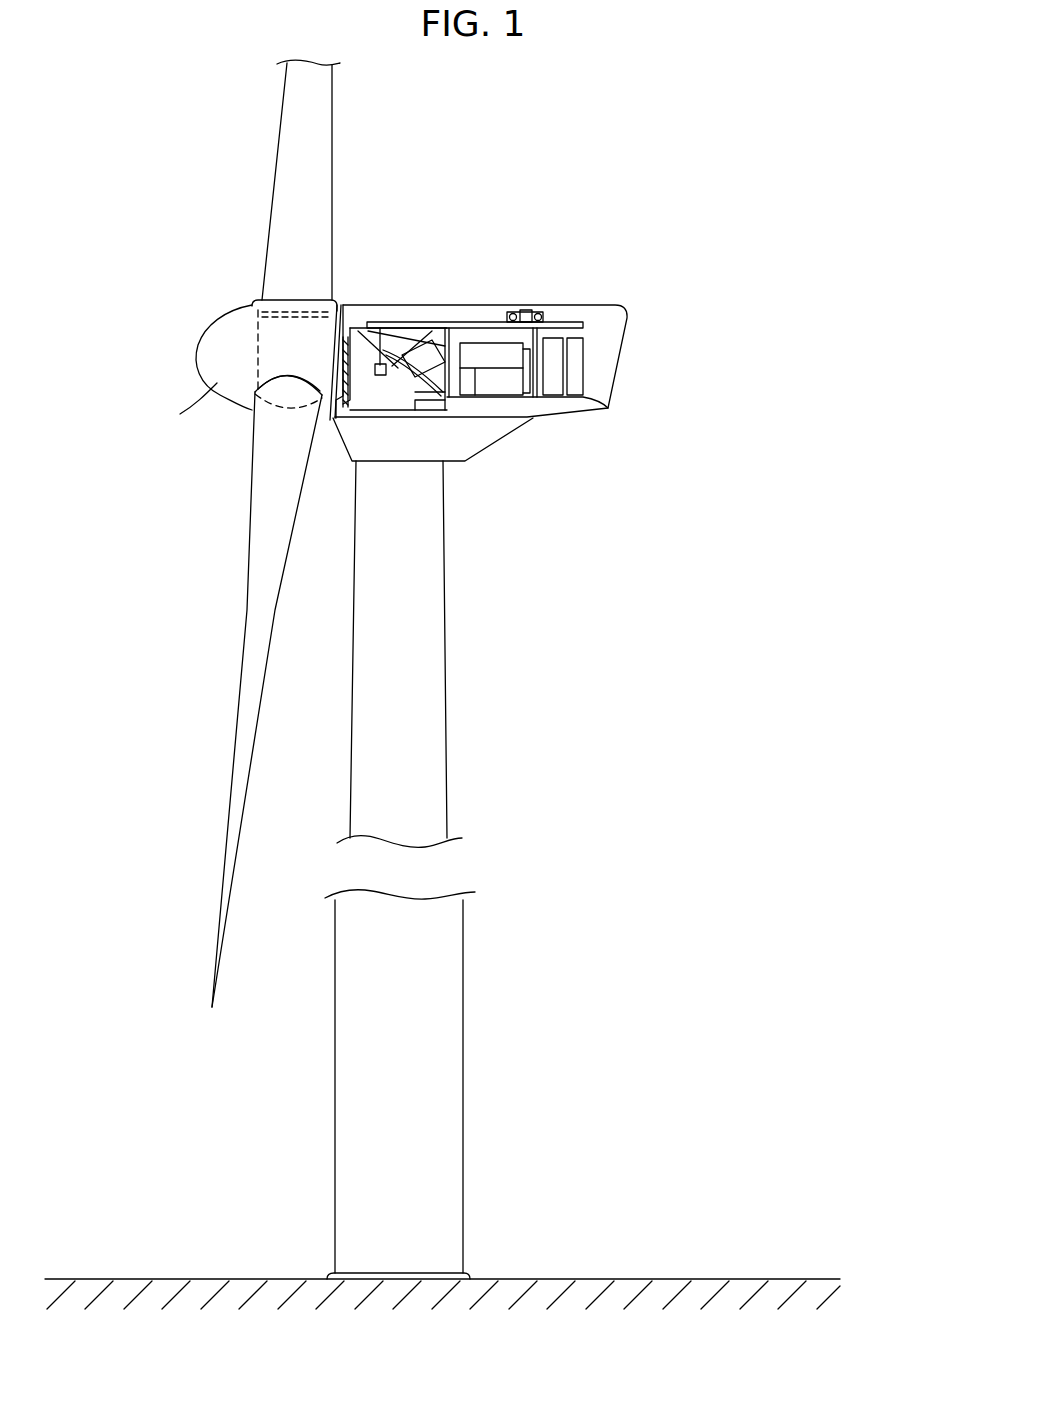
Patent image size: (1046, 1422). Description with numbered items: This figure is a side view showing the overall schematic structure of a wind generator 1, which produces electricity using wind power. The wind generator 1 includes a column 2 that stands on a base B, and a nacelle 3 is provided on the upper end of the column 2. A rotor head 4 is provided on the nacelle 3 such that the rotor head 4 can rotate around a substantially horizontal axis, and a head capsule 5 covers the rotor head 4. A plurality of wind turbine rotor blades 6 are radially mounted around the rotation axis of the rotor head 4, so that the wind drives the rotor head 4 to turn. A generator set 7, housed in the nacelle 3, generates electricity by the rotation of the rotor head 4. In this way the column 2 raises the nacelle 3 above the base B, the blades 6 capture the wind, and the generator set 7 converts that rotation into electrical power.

The wind generator 1 is at (626, 166).
The column 2 is at (462, 1040).
The nacelle 3 is at (628, 352).
The rotor head 4 is at (268, 343).
The head capsule 5 is at (218, 383).
The wind turbine rotor blades 6 is at (278, 147).
The generator set 7 is at (488, 331).
The base B is at (327, 1277).